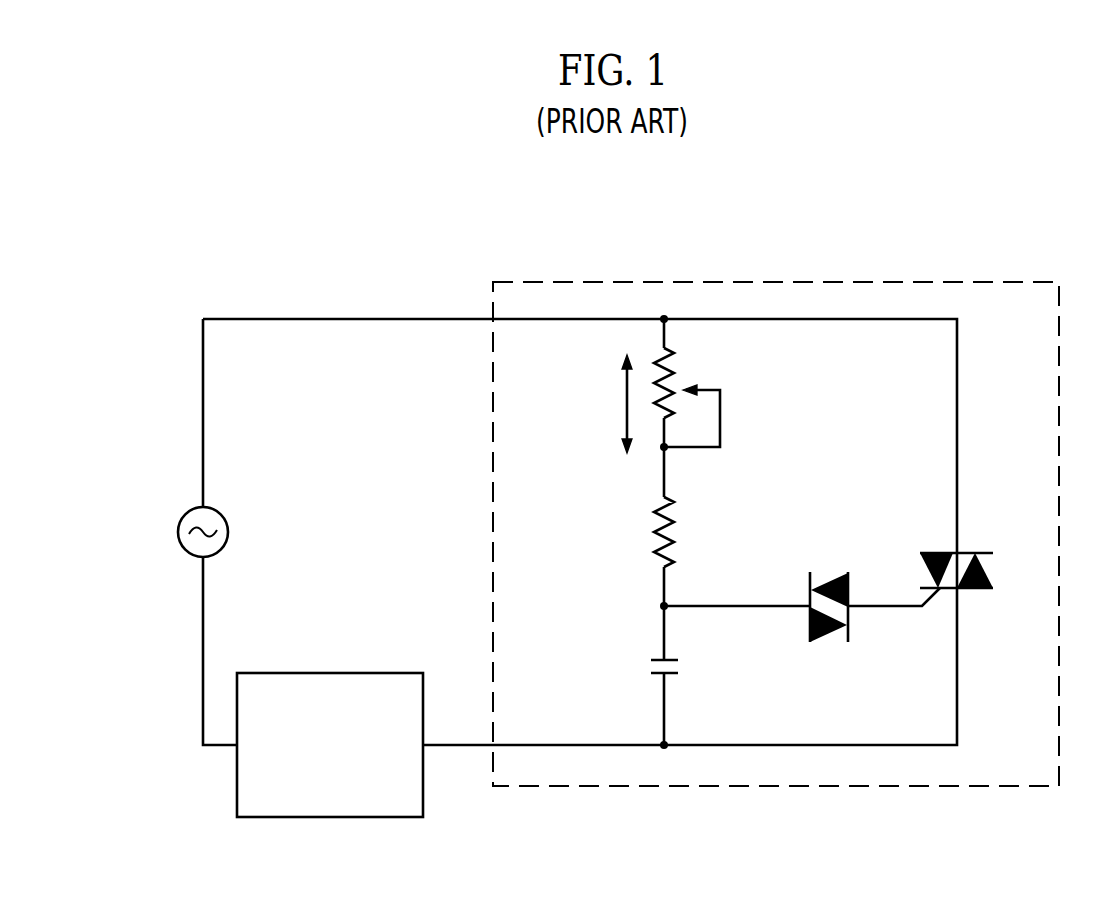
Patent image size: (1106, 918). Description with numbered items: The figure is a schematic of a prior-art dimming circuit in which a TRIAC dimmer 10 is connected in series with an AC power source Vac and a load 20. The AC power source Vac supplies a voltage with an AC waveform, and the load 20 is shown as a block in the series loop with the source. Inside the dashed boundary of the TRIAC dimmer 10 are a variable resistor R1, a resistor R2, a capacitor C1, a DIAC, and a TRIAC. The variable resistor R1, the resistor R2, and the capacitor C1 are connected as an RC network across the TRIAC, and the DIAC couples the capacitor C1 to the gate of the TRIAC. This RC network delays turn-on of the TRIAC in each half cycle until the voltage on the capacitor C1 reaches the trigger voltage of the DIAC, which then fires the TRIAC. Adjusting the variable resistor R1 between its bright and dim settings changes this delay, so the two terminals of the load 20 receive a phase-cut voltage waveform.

The TRIAC dimmer 10 is at (882, 281).
The load 20 is at (380, 673).
The variable resistor R1 is at (702, 403).
The resistor R2 is at (745, 532).
The capacitor C1 is at (740, 689).
The element DIAC is at (832, 626).
The element TRIAC is at (983, 547).
The AC power source Vac is at (232, 532).